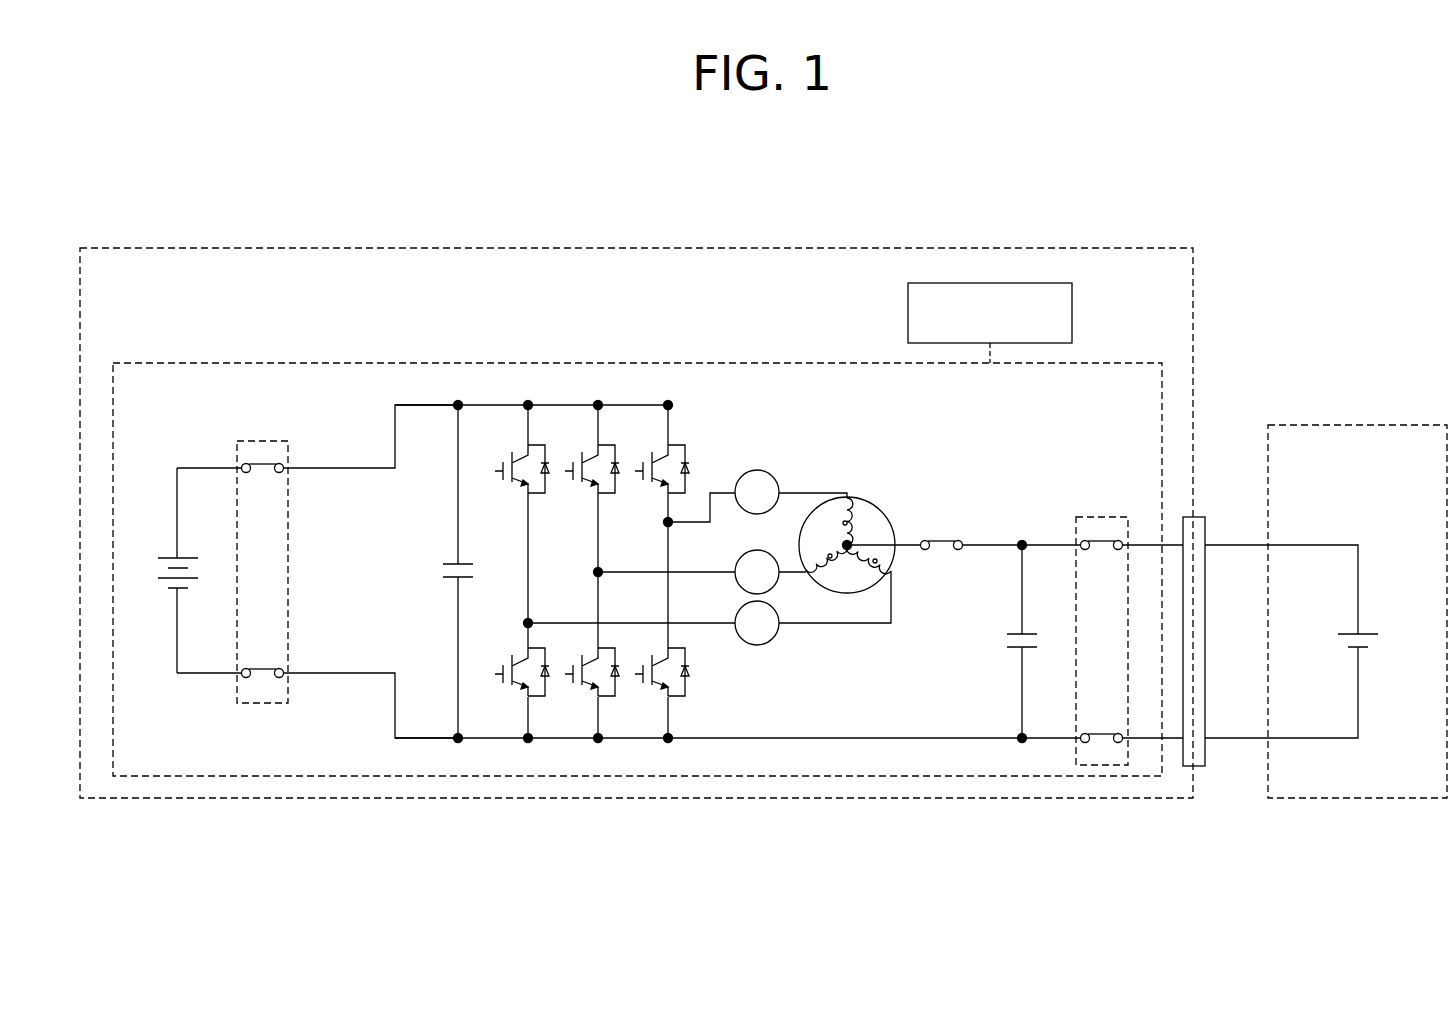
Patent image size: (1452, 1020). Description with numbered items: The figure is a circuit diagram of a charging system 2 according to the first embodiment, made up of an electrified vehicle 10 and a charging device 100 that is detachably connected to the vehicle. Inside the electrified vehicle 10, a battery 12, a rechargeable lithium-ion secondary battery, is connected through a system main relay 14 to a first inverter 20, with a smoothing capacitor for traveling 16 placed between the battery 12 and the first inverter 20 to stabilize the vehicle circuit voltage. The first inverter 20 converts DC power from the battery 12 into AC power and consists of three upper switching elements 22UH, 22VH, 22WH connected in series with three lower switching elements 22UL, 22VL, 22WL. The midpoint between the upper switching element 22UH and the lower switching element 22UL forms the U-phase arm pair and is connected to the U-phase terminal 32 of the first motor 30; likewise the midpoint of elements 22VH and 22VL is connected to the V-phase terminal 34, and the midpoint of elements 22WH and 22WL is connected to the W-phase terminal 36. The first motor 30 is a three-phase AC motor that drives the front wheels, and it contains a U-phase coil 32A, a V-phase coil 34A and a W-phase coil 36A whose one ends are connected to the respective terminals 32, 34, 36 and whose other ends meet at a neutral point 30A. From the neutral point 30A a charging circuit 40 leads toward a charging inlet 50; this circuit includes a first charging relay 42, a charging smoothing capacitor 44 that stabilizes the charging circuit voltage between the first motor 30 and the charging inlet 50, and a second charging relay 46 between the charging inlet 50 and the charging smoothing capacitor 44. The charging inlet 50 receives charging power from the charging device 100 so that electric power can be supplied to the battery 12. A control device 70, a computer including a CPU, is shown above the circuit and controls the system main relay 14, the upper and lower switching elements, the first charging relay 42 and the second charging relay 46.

The charging system 2 is at (1272, 222).
The electrified vehicle 10 is at (1142, 247).
The battery 12 is at (176, 555).
The system main relay 14 is at (252, 440).
The smoothing capacitor for traveling 16 is at (448, 565).
The first inverter 20 is at (697, 395).
The upper switching element 22WH is at (518, 440).
The upper switching element 22VH is at (587, 440).
The upper switching element 22UH is at (657, 440).
The lower switching element 22WL is at (505, 706).
The lower switching element 22VL is at (580, 706).
The lower switching element 22UL is at (655, 706).
The first motor 30 is at (865, 475).
The neutral point 30A is at (850, 542).
The U-phase terminal 32 is at (850, 512).
The U-phase coil 32A is at (843, 525).
The V-phase terminal 34 is at (807, 574).
The V-phase coil 34A is at (833, 565).
The W-phase terminal 36 is at (897, 570).
The W-phase coil 36A is at (880, 585).
The charging circuit 40 is at (1035, 480).
The first charging relay 42 is at (943, 541).
The charging smoothing capacitor 44 is at (1010, 648).
The second charging relay 46 is at (1105, 516).
The charging inlet 50 is at (1207, 515).
The control device 70 is at (1072, 316).
The charging device 100 is at (1390, 425).